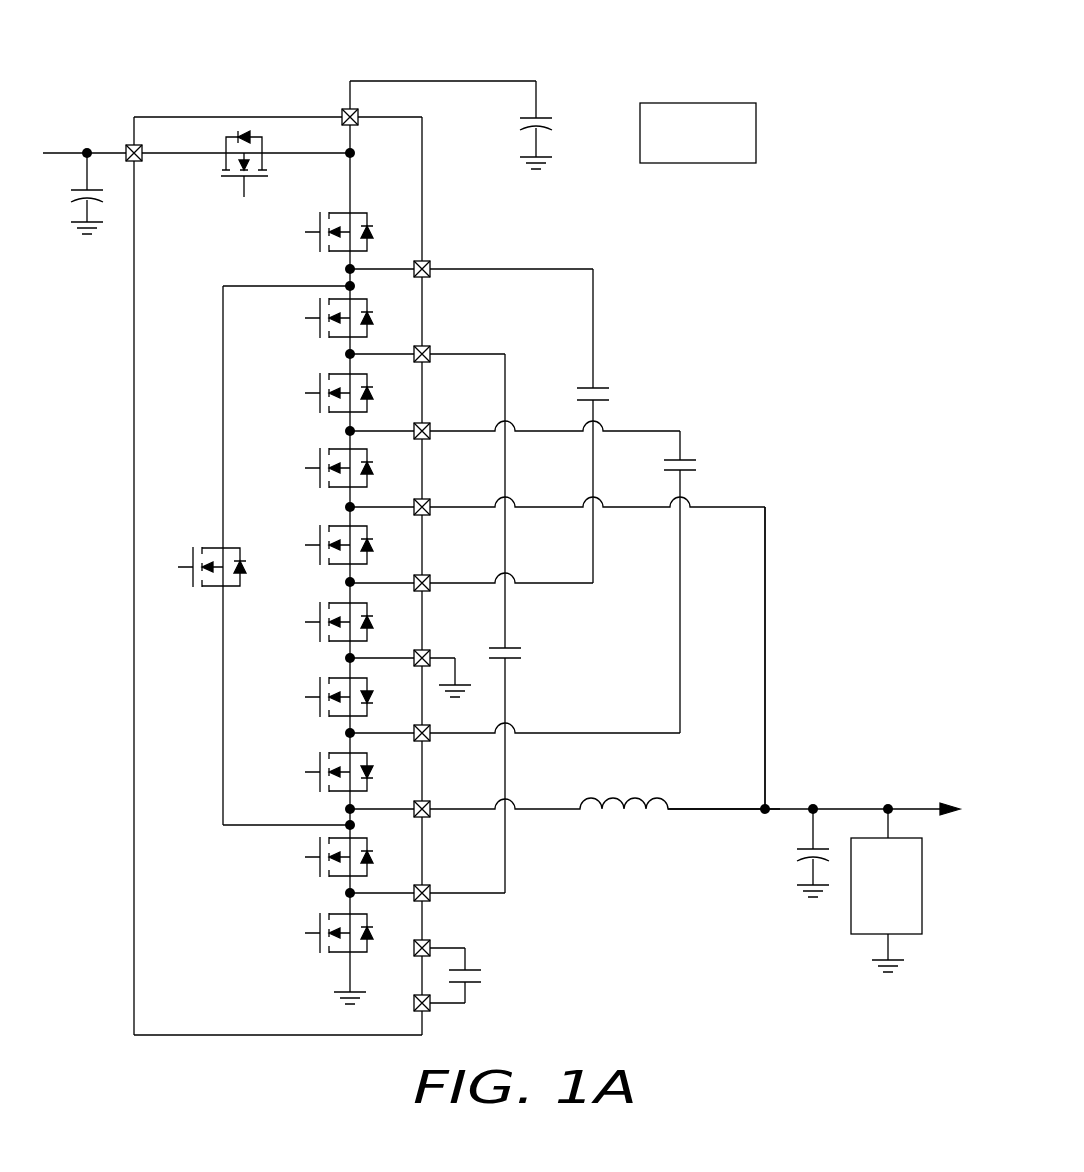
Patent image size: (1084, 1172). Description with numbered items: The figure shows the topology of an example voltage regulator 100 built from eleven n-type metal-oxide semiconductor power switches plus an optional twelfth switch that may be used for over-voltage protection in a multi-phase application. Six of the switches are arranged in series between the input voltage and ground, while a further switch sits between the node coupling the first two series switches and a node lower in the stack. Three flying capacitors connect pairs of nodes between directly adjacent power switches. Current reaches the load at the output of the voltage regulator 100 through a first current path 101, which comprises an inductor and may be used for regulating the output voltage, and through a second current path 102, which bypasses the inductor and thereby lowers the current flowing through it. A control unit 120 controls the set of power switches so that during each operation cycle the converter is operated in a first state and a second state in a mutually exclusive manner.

The voltage regulator 100 is at (153, 38).
The first current path 101 is at (720, 812).
The second current path 102 is at (765, 648).
The control unit 120 is at (688, 103).